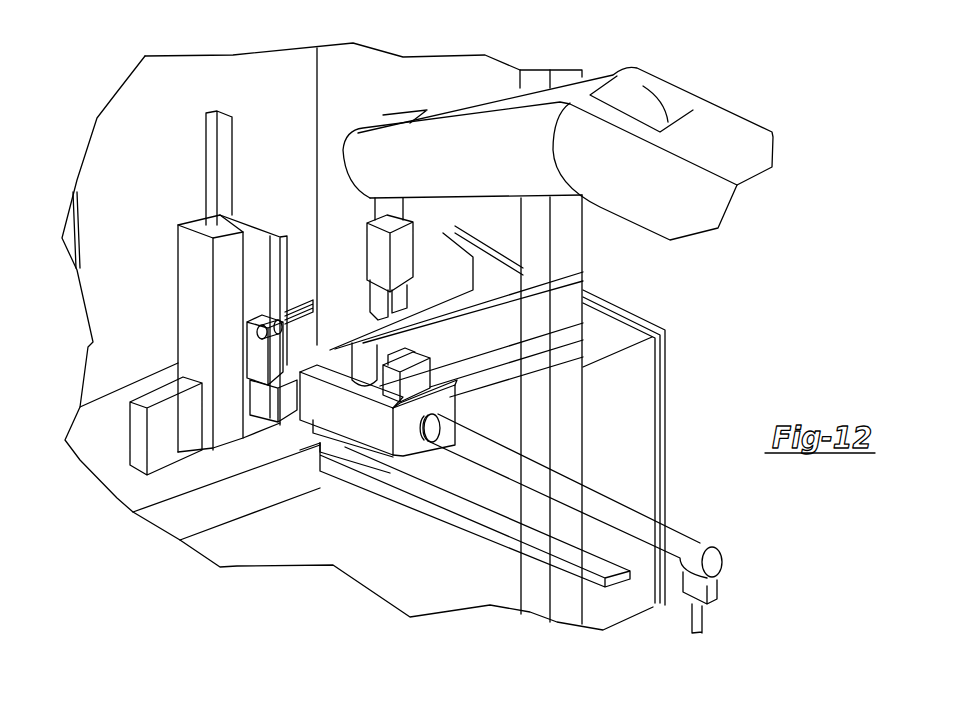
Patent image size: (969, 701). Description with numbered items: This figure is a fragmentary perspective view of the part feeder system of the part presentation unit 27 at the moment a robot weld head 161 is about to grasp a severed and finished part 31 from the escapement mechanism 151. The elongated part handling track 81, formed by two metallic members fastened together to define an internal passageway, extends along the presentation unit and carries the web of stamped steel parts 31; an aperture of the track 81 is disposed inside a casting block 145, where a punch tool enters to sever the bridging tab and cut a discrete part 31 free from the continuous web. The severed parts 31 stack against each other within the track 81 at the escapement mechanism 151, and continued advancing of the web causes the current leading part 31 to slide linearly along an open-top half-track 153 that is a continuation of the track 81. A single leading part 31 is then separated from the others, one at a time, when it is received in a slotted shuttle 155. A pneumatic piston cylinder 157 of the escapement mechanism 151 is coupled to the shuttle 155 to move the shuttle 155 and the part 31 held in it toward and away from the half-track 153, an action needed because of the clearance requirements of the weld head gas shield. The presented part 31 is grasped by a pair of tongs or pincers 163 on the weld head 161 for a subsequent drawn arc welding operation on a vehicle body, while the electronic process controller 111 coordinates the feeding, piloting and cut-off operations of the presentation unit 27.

The casting block 145 is at (140, 115).
The part handling track 81 is at (260, 272).
The open-top half-track 153 is at (300, 325).
The escapement mechanism 151 is at (362, 460).
The part 31 is at (345, 407).
The pneumatic piston cylinder 157 is at (655, 537).
The slotted shuttle 155 is at (413, 370).
The process controller 111 is at (625, 431).
The weld head 161 is at (402, 253).
The pincers 163 is at (380, 300).
The part presentation unit 27 is at (100, 497).